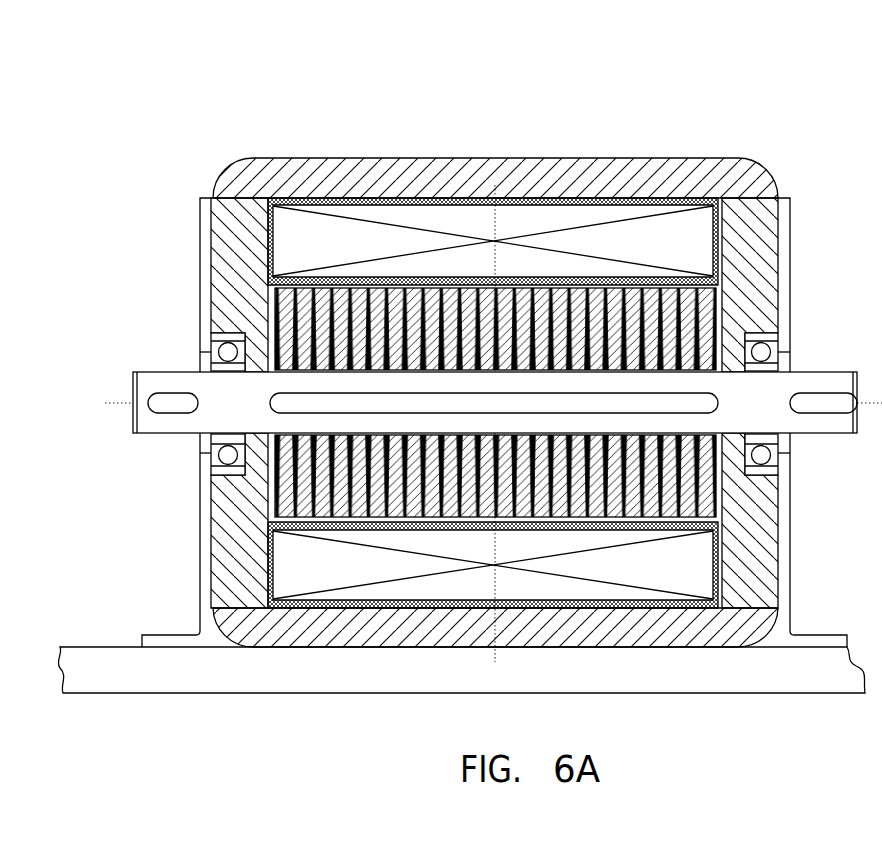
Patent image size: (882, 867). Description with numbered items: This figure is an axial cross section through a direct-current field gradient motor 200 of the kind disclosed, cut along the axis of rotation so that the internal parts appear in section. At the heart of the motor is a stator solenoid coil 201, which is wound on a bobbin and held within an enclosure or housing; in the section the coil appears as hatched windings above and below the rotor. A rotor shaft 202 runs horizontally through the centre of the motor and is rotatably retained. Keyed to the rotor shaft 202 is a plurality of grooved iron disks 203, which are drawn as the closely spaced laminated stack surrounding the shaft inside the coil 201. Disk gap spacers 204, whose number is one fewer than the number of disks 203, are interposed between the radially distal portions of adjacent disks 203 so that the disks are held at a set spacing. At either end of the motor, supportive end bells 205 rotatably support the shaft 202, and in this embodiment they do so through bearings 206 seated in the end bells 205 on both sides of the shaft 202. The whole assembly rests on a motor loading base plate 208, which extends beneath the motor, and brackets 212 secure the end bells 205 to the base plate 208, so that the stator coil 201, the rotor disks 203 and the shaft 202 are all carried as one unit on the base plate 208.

The DC field gradient motor 200 is at (491, 366).
The stator solenoid coil 201 is at (493, 343).
The rotor shaft 202 is at (478, 362).
The grooved iron disks 203 is at (423, 415).
The disk gap spacers 204 is at (493, 347).
The supportive end bells 205 is at (544, 400).
The bearings 206 is at (543, 447).
The motor loading base plate 208 is at (461, 709).
The brackets 212 is at (473, 413).